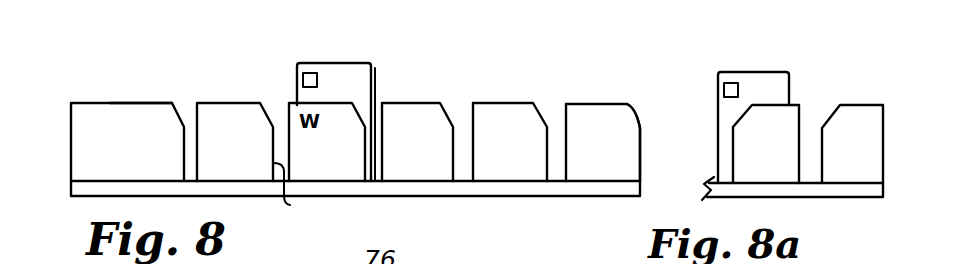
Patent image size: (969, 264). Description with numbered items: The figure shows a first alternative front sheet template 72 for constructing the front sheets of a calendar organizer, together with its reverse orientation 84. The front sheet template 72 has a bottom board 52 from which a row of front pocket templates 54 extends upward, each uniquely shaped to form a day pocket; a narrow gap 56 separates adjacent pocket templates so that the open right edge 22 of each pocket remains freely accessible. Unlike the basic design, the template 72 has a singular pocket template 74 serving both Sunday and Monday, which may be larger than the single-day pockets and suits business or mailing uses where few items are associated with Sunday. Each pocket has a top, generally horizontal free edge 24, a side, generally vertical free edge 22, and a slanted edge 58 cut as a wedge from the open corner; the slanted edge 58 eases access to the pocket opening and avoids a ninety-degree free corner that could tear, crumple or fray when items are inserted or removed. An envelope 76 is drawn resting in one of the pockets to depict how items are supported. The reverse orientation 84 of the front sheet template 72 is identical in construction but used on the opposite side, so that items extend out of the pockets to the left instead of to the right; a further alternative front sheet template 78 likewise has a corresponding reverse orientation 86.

In FIG. 8, the front sheet template 72 is at (56, 96).
In FIG. 8, the singular pocket template 74 is at (123, 117).
In FIG. 8, the envelope 76 is at (325, 72).
In FIG. 8A, the envelope 76 is at (753, 72).
In FIG. 8, the gap 56 is at (296, 199).
In FIG. 8, the front pocket template 54 is at (492, 105).
In FIG. 8, the top free edge 24 is at (588, 103).
In FIG. 8, the slanted edge 58 is at (633, 110).
In FIG. 8, the open right edge 22 is at (642, 153).
In FIG. 8, the bottom board 52 is at (532, 188).
In FIG. 8A, the reverse orientation 84 is at (858, 96).
In FIG. 8, the front sheet template 78 is at (44, 253).
In FIG. 8A, the reverse orientation 86 is at (909, 253).